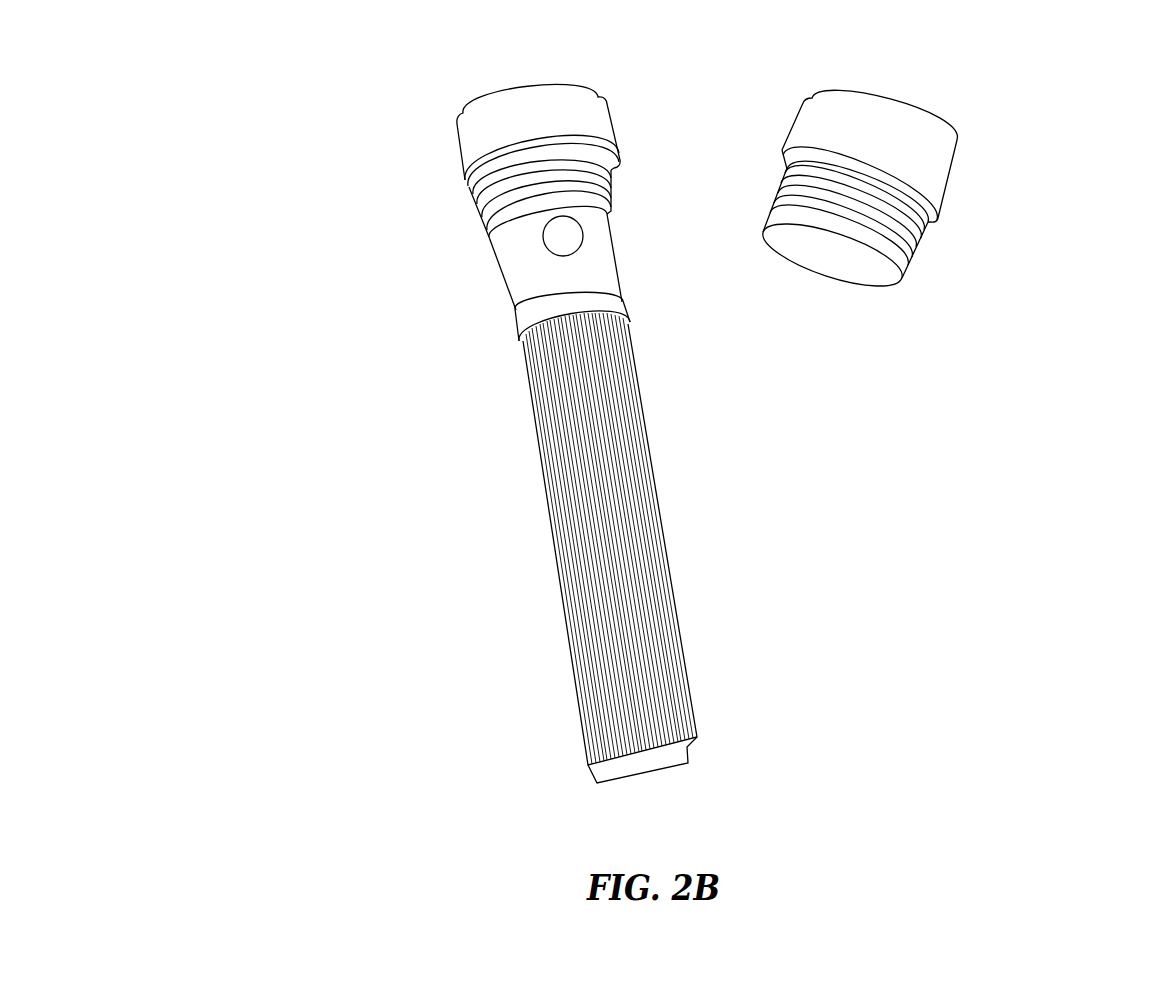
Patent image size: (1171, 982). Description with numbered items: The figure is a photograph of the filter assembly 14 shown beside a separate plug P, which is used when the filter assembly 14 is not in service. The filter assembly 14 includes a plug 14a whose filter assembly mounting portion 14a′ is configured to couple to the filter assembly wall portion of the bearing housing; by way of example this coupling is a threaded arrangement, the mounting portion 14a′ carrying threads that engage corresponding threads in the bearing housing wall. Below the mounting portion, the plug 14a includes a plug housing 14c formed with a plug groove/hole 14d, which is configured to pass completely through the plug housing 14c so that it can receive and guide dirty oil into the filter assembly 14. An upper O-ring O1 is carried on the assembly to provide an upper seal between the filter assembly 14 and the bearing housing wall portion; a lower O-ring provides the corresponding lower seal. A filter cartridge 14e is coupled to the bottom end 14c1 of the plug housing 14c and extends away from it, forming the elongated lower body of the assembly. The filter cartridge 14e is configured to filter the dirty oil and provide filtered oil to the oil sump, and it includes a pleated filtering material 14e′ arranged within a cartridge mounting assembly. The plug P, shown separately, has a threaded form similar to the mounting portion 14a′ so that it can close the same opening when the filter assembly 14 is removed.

The filter assembly 14 is at (345, 78).
The plug 14a is at (437, 157).
The upper O-ring O1 is at (498, 203).
The filter assembly mounting portion 14a′ is at (487, 223).
The plug housing 14c is at (518, 240).
The plug groove/hole 14d is at (543, 243).
The bottom end 14c1 is at (515, 313).
The filter cartridge 14e is at (517, 503).
The pleated filtering material 14e′ is at (593, 560).
The plug P is at (965, 220).